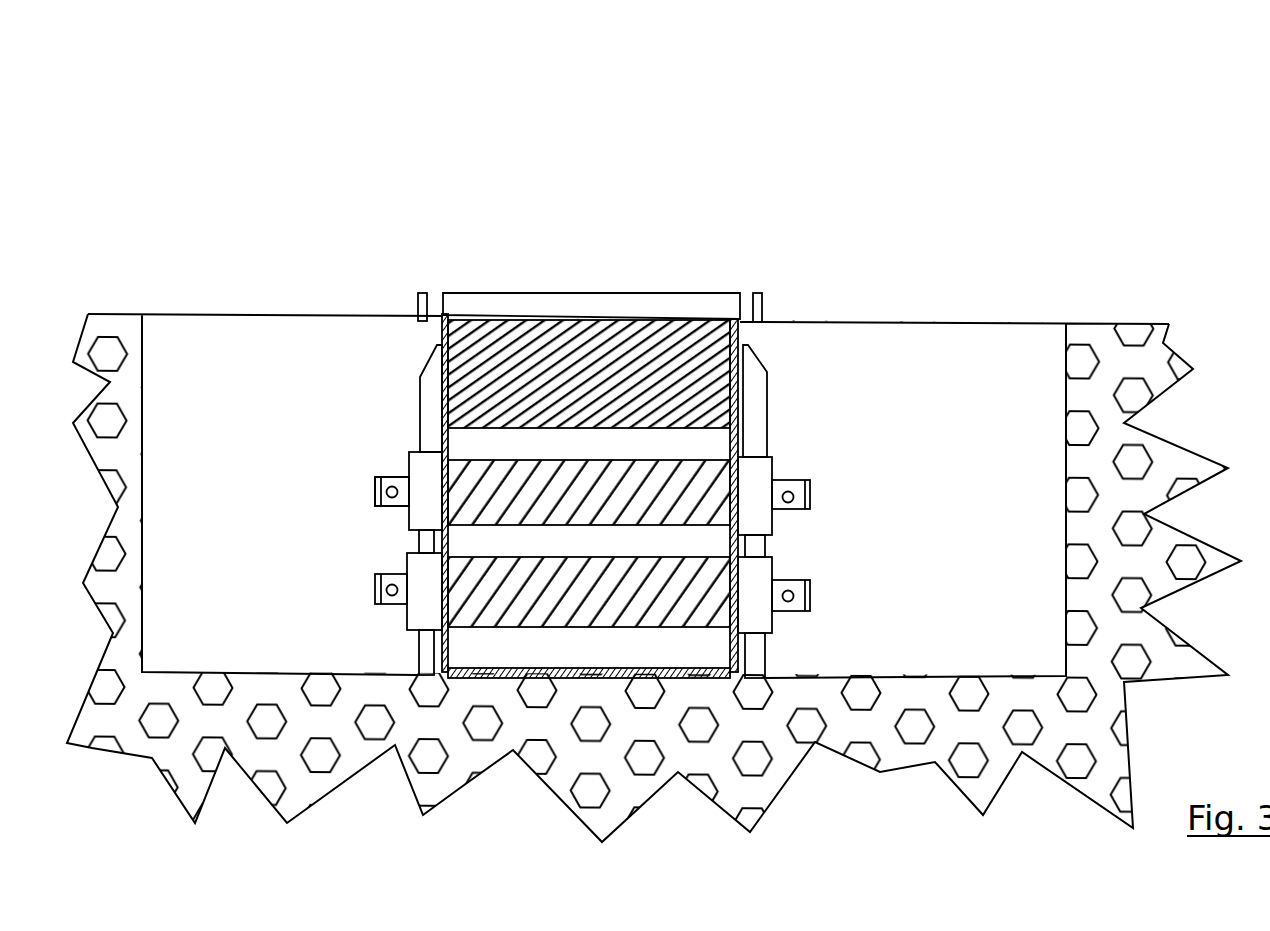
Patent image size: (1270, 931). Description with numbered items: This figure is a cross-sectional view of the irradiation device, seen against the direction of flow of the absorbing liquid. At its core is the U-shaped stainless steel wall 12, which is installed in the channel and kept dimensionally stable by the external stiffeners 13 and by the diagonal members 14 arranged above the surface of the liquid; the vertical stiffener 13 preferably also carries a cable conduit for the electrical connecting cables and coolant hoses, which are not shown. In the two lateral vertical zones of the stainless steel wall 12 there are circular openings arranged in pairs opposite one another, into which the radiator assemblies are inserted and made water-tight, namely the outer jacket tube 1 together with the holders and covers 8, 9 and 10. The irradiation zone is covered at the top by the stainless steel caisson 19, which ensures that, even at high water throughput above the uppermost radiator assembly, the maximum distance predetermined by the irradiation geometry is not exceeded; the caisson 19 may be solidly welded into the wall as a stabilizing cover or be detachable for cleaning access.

The outer jacket tube 1 is at (700, 495).
The holder 8 is at (412, 453).
The holder 9 is at (378, 505).
The cover 10 is at (376, 478).
The U-shaped stainless steel wall 12 is at (740, 295).
The external stiffener 13 is at (417, 377).
The diagonal member 14 is at (600, 293).
The stainless steel caisson 19 is at (500, 345).